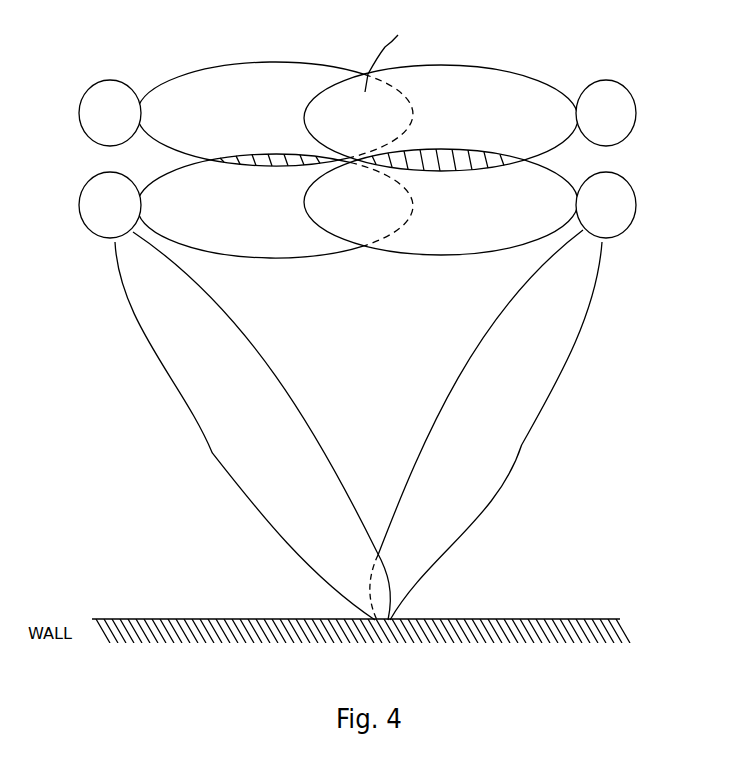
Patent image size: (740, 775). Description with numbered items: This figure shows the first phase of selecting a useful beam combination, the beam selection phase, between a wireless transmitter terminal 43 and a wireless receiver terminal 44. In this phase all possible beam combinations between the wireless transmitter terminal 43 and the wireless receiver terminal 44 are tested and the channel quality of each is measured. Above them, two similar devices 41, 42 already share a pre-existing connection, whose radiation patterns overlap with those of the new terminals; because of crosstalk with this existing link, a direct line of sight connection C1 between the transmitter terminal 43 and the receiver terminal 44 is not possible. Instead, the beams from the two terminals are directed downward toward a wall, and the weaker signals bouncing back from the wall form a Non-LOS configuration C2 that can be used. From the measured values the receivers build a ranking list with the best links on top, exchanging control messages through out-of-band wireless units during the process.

The similar device 41 is at (80, 118).
The similar device 42 is at (637, 112).
The wireless transmitter terminal 43 is at (80, 213).
The wireless receiver terminal 44 is at (637, 204).
The direct line of sight connection C1 is at (365, 232).
The Non-LOS configuration C2 is at (378, 577).